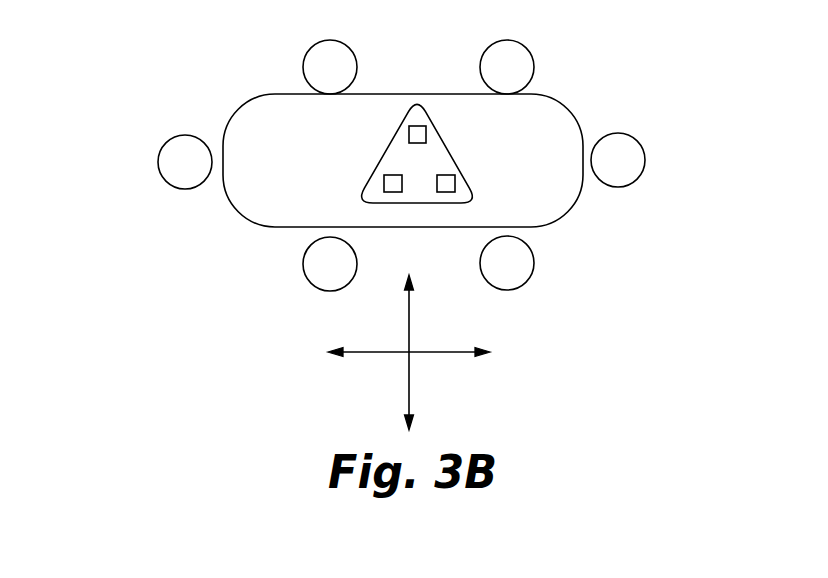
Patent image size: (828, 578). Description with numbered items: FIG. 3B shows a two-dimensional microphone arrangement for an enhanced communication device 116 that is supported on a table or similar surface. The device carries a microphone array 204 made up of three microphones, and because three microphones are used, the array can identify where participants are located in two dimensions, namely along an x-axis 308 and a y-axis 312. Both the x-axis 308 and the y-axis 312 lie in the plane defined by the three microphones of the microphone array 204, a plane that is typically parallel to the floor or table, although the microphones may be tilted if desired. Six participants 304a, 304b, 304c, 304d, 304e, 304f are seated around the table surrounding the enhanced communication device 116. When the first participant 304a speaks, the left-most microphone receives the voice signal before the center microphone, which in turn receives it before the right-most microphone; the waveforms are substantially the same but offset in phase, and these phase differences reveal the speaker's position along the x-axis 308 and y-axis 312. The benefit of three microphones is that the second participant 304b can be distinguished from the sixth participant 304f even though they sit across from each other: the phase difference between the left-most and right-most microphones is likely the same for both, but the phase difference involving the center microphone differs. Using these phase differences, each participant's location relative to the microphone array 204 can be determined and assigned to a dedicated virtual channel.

The enhanced communication device 116 is at (449, 152).
The microphone array 204 is at (437, 183).
The first participant 304a is at (166, 181).
The second participant 304b is at (304, 257).
The third participant 304c is at (533, 258).
The fourth participant 304d is at (695, 163).
The fifth participant 304e is at (521, 44).
The sixth participant 304f is at (344, 44).
The x-axis 308 is at (378, 348).
The y-axis 312 is at (407, 387).